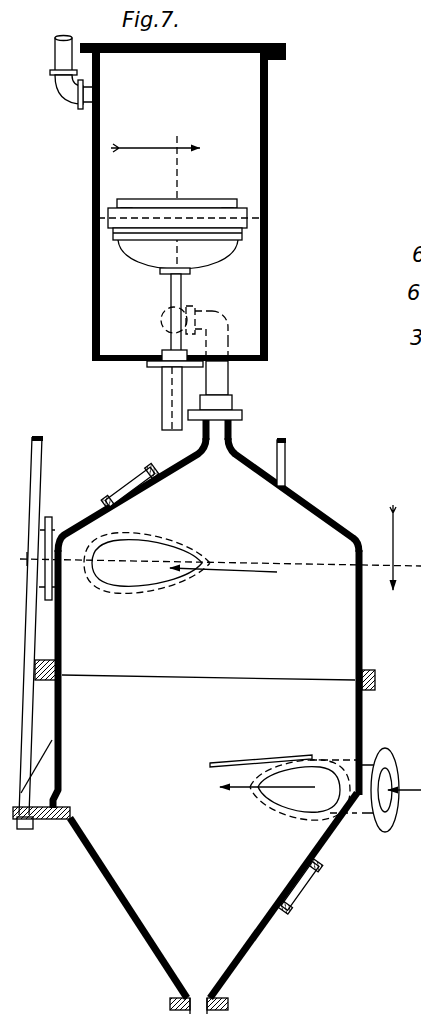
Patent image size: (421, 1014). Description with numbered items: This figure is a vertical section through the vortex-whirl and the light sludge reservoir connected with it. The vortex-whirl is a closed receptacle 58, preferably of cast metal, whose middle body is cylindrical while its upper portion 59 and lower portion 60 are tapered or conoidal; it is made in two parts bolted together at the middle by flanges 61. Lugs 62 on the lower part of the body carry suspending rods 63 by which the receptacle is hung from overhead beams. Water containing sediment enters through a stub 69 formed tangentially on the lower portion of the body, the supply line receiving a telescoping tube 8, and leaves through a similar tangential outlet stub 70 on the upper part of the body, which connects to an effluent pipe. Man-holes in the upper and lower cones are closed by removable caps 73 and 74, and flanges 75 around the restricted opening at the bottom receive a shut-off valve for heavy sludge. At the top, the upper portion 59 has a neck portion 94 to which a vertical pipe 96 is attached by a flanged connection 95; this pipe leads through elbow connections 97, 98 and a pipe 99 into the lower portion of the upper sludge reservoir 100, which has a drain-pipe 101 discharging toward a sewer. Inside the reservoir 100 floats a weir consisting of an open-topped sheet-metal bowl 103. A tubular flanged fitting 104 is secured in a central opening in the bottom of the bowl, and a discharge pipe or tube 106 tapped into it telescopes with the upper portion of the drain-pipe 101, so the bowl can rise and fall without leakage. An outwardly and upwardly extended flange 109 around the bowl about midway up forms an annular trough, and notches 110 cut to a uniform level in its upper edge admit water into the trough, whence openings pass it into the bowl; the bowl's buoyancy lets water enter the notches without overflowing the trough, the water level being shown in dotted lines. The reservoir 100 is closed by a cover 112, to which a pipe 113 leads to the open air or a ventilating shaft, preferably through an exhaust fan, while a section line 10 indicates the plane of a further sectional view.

The telescoping tube 8 is at (220, 548).
The section line arrow 10 is at (155, 235).
The closed receptacle 58 is at (363, 623).
The upper portion 59 is at (337, 505).
The lower portion 60 is at (262, 937).
The flanges 61 is at (375, 683).
The lugs 62 is at (47, 820).
The suspending rods 63 is at (43, 453).
The stub 69 is at (368, 765).
The outlet stub 70 is at (61, 532).
The removable cap 73 is at (153, 468).
The removable cap 74 is at (322, 862).
The flanges 75 is at (229, 1003).
The neck portion 94 is at (229, 428).
The flanged connection 95 is at (242, 413).
The vertical pipe 96 is at (221, 378).
The elbow connection 97 is at (230, 320).
The elbow connection 98 is at (184, 311).
The pipe 99 is at (161, 318).
The upper sludge reservoir 100 is at (268, 140).
The drain-pipe 101 is at (170, 413).
The bowl 103 is at (222, 256).
The tubular flanged fitting 104 is at (160, 271).
The discharge pipe or tube 106 is at (171, 293).
The flange 109 is at (242, 229).
The notches 110 is at (220, 206).
The cover 112 is at (124, 44).
The pipe 113 is at (90, 104).